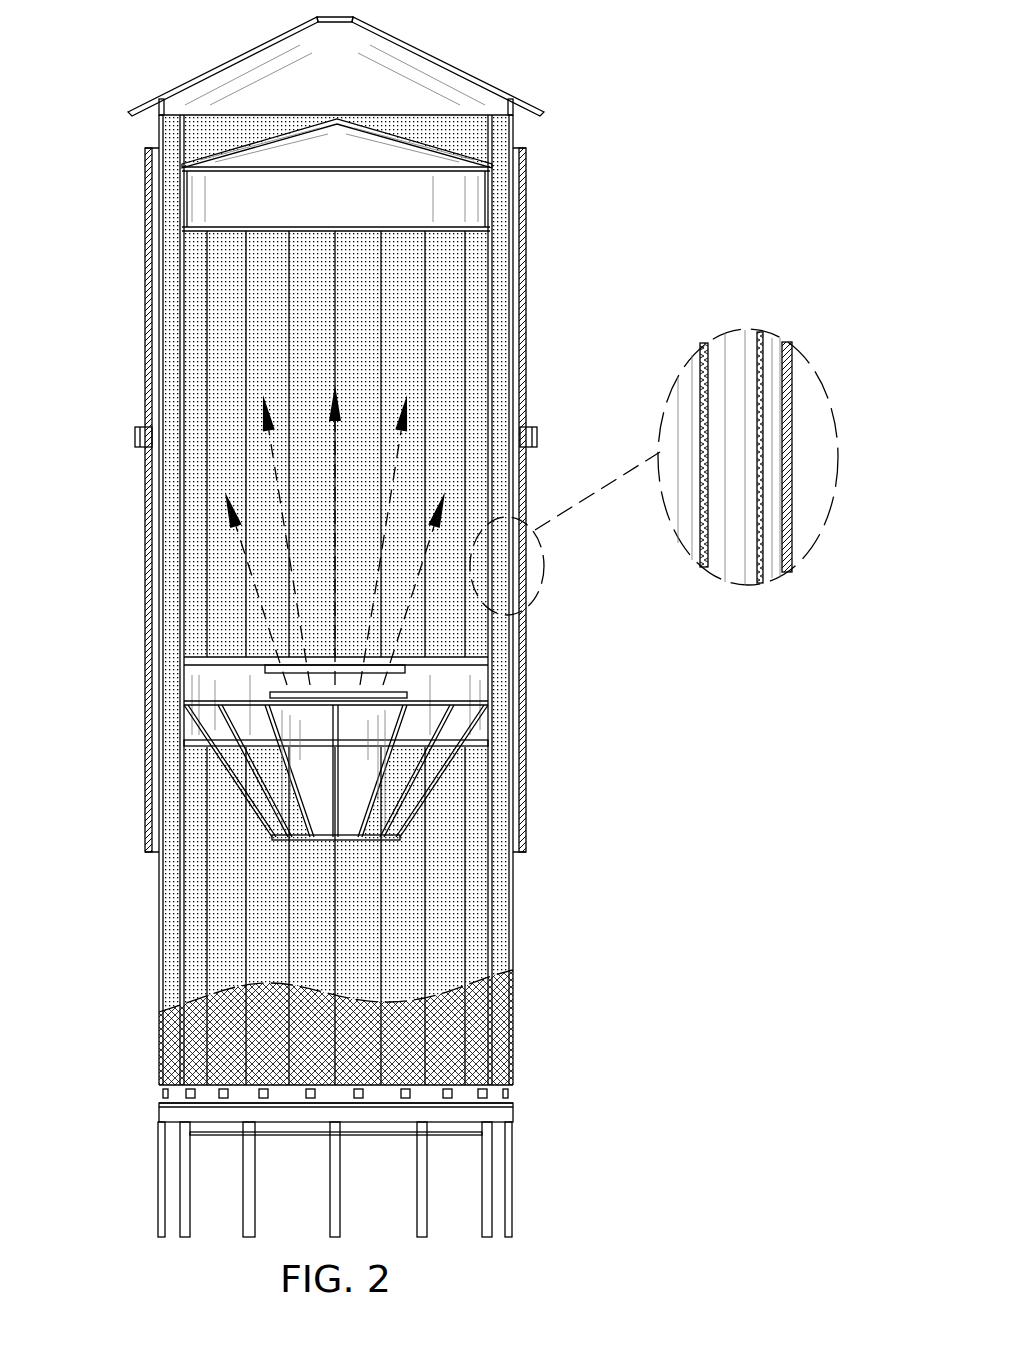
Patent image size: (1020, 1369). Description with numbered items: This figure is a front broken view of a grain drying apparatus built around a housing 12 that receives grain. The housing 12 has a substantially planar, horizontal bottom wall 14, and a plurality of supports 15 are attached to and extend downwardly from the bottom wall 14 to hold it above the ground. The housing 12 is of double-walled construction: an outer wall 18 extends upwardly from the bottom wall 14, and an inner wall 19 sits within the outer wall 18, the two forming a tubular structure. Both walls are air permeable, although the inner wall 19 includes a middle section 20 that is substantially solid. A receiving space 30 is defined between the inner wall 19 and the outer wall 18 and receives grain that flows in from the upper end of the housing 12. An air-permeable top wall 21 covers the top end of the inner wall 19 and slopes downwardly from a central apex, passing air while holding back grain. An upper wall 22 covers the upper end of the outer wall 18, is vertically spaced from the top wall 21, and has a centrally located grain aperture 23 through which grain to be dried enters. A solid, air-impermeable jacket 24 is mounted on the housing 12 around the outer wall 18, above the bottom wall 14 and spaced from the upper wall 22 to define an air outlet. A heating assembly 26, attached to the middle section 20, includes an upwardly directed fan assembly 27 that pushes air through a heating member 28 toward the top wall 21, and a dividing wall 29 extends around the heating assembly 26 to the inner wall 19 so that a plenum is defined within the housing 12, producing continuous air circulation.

The housing 12 is at (513, 1093).
The bottom wall 14 is at (159, 1110).
The supports 15 is at (250, 1237).
The outer wall 18 is at (760, 352).
The inner wall 19 is at (708, 362).
The middle section 20 is at (492, 703).
The top wall 21 is at (440, 155).
The upper wall 22 is at (413, 44).
The grain aperture 23 is at (318, 15).
The jacket 24 is at (525, 311).
The heating assembly 26 is at (196, 781).
The fan assembly 27 is at (380, 760).
The heating member 28 is at (398, 673).
The dividing wall 29 is at (195, 660).
The receiving space 30 is at (725, 582).